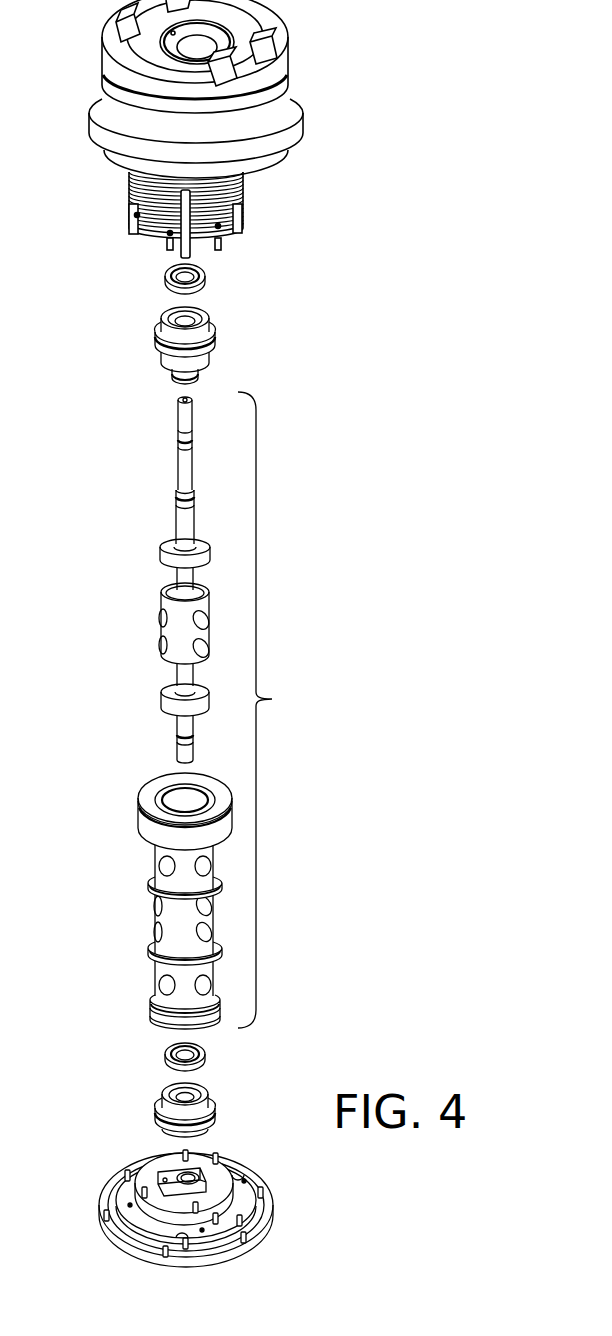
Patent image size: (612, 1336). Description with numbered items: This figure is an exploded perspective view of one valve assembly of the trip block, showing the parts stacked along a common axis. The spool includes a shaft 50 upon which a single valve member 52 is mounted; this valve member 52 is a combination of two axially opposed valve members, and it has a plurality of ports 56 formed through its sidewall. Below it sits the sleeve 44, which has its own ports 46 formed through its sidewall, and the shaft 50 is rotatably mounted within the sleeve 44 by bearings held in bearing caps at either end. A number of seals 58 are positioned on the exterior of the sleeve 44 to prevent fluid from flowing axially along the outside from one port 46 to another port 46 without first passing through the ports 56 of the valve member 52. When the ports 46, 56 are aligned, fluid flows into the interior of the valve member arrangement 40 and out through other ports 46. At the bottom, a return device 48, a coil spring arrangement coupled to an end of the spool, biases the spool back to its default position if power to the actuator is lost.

The valve member arrangement 40 is at (270, 710).
The sleeve 44 is at (175, 948).
The ports 46 is at (160, 866).
The return device 48 is at (93, 1188).
The shaft 50 is at (176, 466).
The valve member 52 is at (162, 604).
The ports 56 is at (160, 645).
The seals 58 is at (150, 885).